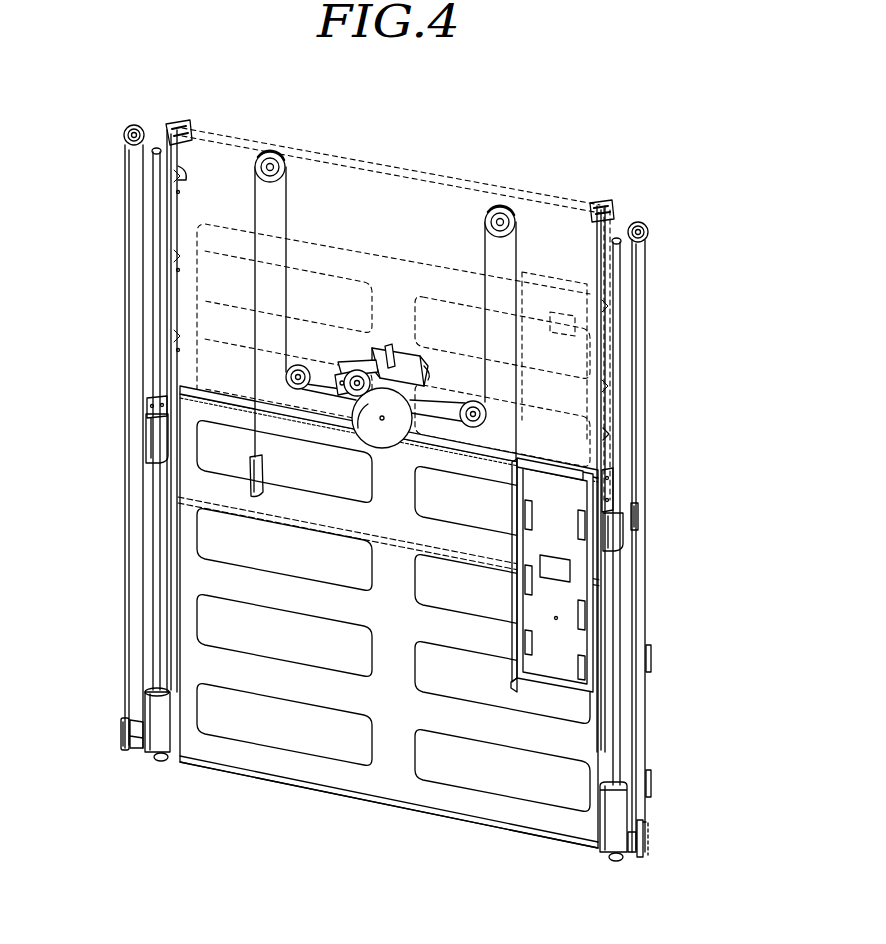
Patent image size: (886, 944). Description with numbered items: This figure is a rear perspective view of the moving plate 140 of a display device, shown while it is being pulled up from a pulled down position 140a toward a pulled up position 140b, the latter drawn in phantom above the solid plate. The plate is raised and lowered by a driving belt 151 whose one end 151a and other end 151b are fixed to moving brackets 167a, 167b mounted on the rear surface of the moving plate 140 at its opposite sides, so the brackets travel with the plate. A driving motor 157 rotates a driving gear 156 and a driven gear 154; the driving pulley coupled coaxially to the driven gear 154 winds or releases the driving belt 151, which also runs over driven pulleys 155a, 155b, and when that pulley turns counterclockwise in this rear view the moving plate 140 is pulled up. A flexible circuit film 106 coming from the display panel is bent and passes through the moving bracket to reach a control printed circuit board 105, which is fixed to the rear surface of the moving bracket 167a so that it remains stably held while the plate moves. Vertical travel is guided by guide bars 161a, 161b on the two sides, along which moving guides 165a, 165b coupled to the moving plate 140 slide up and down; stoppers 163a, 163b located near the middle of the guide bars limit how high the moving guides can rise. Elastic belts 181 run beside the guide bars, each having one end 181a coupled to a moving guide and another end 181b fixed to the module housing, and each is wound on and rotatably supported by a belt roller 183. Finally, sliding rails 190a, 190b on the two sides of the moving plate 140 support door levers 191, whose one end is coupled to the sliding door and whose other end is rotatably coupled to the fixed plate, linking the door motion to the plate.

The control printed circuit board 105 is at (572, 630).
The flexible circuit film 106 is at (560, 576).
The moving plate 140 is at (392, 792).
The pulled down position 140a is at (178, 382).
The pulled up position 140b is at (214, 126).
The driving belt 151 is at (288, 214).
The one end of driving belt 151a is at (638, 516).
The other end of driving belt 151b is at (250, 470).
The driven gear 154 is at (414, 364).
The driven pulley 155a is at (300, 362).
The driven pulley 155b is at (272, 150).
The driving gear 156 is at (365, 366).
The driving motor 157 is at (466, 400).
The guide bar 161a is at (620, 750).
The guide bar 161b is at (157, 555).
The stopper 163a is at (610, 536).
The stopper 163b is at (146, 438).
The moving guide 165a is at (605, 826).
The moving guide 165b is at (153, 752).
The moving bracket 167a is at (608, 490).
The moving bracket 167b is at (148, 410).
The elastic belt 181 is at (126, 676).
The one end of elastic belt 181a is at (138, 748).
The other end of elastic belt 181b is at (121, 732).
The belt roller 183 is at (644, 226).
The sliding rail 190a is at (605, 730).
The sliding rail 190b is at (176, 516).
The door lever 191 is at (178, 172).